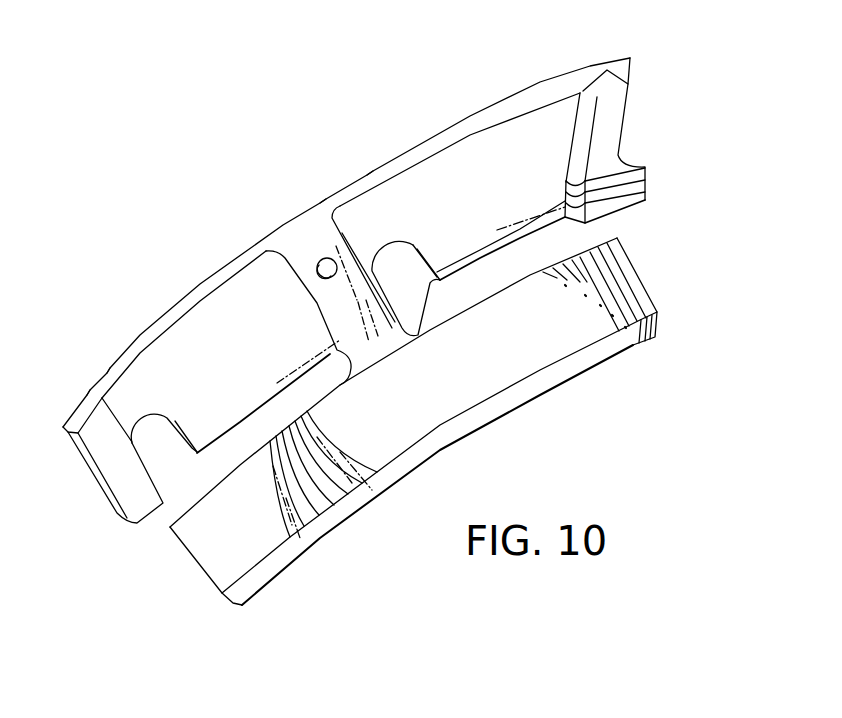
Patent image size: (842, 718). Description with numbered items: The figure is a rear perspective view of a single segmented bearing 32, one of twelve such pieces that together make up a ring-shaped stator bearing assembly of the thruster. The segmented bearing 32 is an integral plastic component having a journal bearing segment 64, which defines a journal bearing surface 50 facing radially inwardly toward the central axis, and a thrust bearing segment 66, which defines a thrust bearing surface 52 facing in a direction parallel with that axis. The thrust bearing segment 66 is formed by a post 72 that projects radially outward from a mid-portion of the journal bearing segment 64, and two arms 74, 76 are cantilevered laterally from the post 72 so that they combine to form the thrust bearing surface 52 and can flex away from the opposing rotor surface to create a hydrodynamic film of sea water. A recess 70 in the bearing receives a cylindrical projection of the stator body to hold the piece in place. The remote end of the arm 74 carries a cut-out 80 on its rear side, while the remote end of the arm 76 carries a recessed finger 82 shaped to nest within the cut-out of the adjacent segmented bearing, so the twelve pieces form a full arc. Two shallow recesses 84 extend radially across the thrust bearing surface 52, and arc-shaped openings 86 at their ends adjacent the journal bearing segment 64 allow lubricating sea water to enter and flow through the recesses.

The segmented bearing 32 is at (166, 246).
The journal bearing surface 50 is at (473, 427).
The thrust bearing surface 52 is at (442, 127).
The journal bearing segment 64 is at (643, 277).
The thrust bearing segment 66 is at (298, 242).
The recess 70 is at (326, 279).
The post 72 is at (351, 320).
The arm 74 is at (202, 335).
The arm 76 is at (495, 153).
The cut-out 80 is at (73, 410).
The recessed finger 82 is at (632, 75).
The shallow recess 84 is at (105, 374).
The arc-shaped opening 86 is at (405, 284).